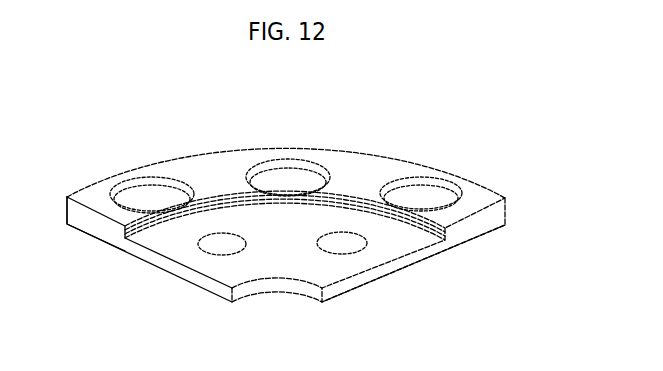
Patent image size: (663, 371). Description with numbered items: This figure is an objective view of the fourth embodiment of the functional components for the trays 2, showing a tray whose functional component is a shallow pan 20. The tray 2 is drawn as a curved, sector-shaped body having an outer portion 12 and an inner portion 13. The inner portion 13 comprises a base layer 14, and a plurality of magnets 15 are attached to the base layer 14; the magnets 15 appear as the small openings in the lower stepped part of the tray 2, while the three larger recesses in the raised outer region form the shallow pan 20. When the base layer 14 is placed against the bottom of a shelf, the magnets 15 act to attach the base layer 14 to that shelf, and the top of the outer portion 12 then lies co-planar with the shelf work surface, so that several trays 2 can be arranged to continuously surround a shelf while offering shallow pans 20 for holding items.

The tray 2 is at (303, 226).
The outer portion 12 is at (64, 224).
The inner portion 13 is at (413, 279).
The base layer 14 is at (413, 269).
The magnets 15 is at (322, 252).
The shallow pan 20 is at (184, 188).